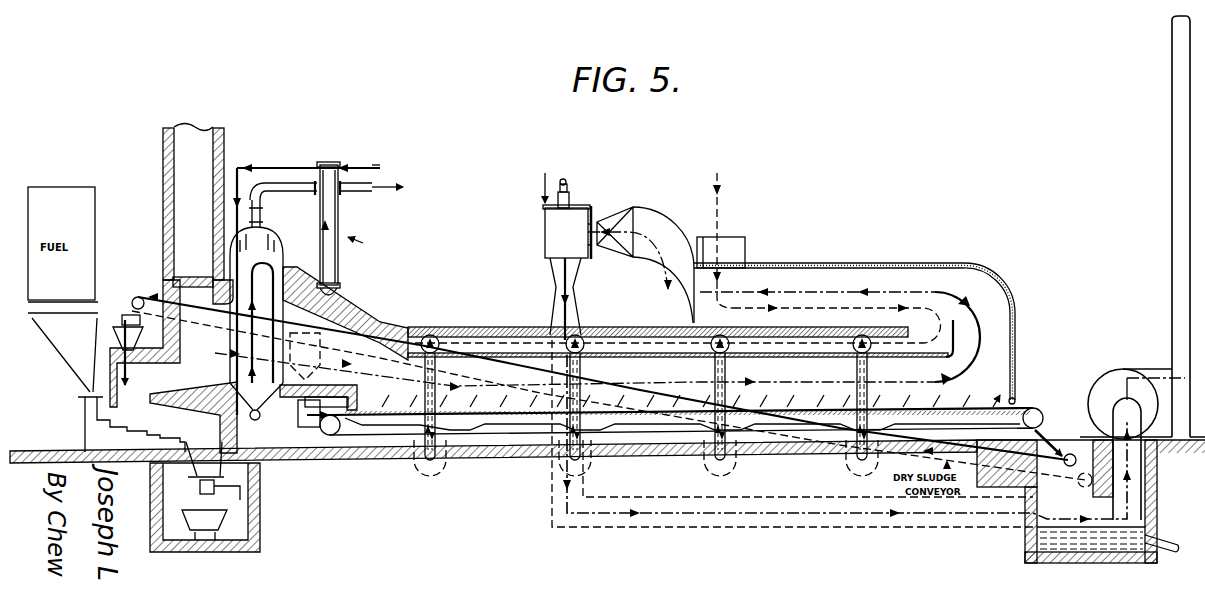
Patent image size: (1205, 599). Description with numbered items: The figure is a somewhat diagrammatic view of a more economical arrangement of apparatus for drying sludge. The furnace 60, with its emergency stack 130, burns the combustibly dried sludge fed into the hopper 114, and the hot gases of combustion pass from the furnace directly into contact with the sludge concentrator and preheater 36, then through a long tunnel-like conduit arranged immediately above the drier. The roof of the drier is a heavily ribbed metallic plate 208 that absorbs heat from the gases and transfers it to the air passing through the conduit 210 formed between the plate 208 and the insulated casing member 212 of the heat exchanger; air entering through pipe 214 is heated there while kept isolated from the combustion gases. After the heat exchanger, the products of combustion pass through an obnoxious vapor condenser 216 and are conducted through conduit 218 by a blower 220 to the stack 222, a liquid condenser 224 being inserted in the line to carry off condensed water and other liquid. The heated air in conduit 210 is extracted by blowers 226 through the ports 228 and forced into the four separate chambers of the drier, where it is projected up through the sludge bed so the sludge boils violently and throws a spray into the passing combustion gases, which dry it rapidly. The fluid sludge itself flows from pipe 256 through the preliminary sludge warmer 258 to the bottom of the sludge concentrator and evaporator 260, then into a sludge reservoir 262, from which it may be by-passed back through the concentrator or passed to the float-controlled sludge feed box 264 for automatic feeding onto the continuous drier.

The sludge concentrator and preheater 36 is at (292, 284).
The furnace 60 is at (210, 405).
The hopper 114 is at (115, 338).
The emergency stack 130 is at (205, 137).
The metallic plate 208 is at (642, 325).
The conduit 210 is at (813, 340).
The insulated casing member 212 is at (487, 330).
The pipe 214 is at (745, 248).
The obnoxious vapor condenser 216 is at (573, 218).
The conduit 218 is at (828, 524).
The blower 220 is at (1103, 380).
The stack 222 is at (1180, 318).
The liquid condenser 224 is at (1033, 542).
The blowers 226 is at (432, 483).
The ports 228 is at (430, 335).
The pipe 256 is at (363, 163).
The preliminary sludge warmer 258 is at (338, 215).
The sludge concentrator and evaporator 260 is at (258, 419).
The sludge reservoir 262 is at (355, 317).
The float-controlled sludge feed box 264 is at (312, 407).